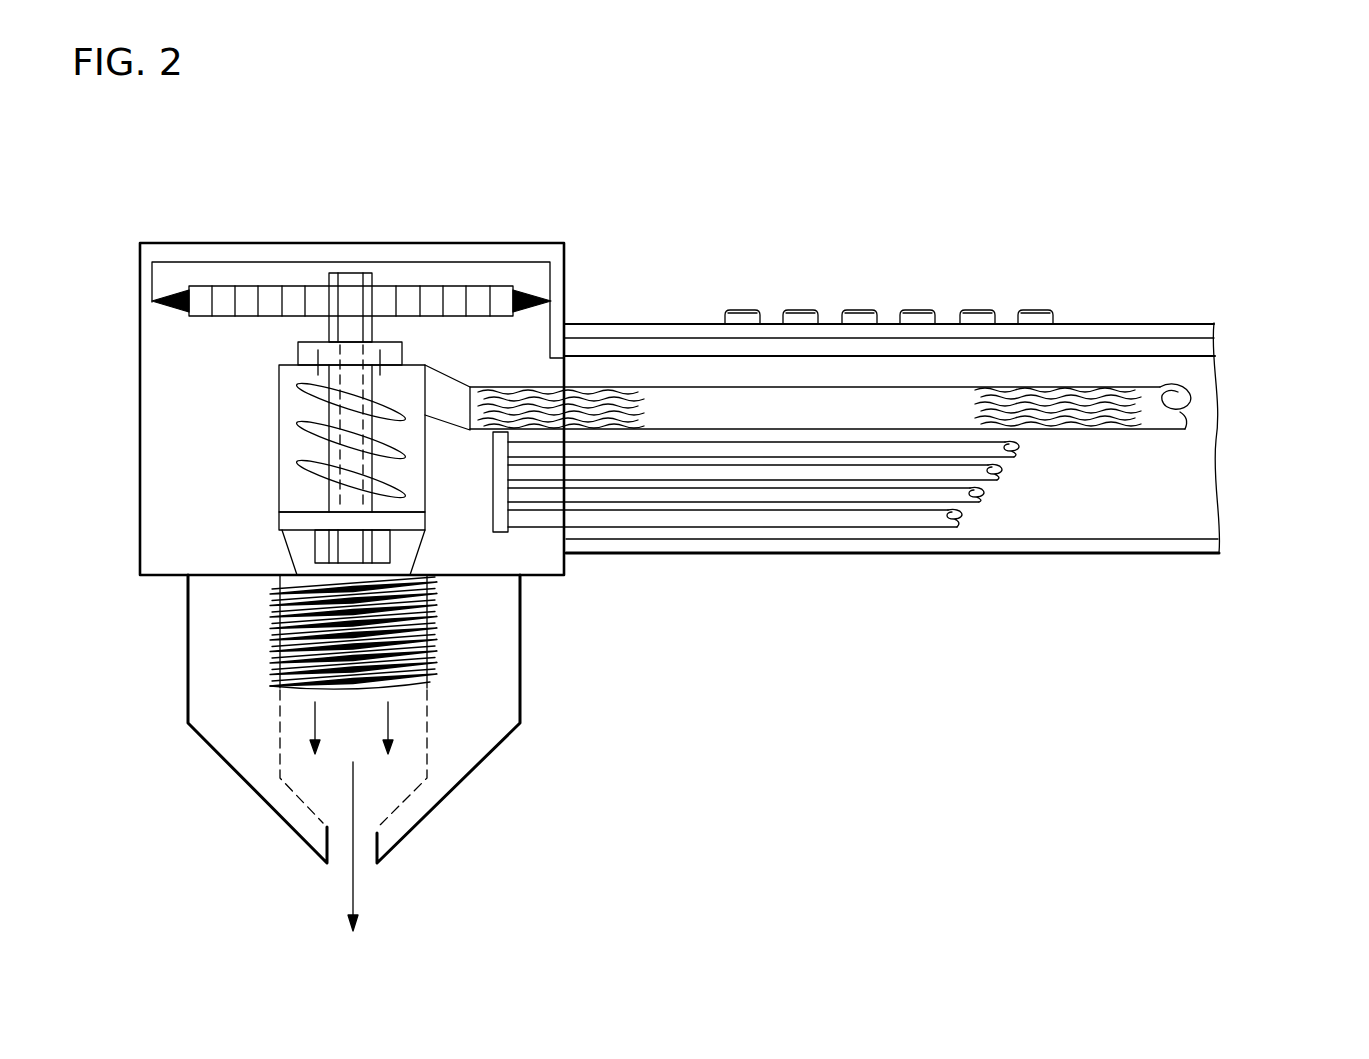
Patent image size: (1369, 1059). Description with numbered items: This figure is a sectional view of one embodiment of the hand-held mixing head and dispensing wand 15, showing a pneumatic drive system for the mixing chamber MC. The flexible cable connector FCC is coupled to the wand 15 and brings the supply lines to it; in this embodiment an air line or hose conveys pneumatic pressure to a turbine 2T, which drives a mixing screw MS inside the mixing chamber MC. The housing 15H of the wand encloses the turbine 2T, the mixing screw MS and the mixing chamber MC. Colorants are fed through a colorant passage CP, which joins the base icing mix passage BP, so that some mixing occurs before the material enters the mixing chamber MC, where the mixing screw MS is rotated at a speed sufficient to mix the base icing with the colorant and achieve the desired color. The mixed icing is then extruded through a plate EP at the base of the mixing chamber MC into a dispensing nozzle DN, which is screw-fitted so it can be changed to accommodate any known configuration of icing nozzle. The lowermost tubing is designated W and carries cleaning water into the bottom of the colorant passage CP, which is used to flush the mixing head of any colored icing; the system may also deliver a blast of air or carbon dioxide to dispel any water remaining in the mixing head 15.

The hand-held mixing head and dispensing wand 15 is at (328, 210).
The housing 15H is at (140, 370).
The turbine 2T is at (425, 277).
The mixing chamber MC is at (403, 387).
The mixing screw MS is at (300, 427).
The plate EP is at (280, 520).
The base icing mix passage BP is at (518, 400).
The colorant passage CP is at (500, 525).
The tubing for cleaning water W is at (755, 522).
The flexible cable connector FCC is at (1255, 472).
The dispensing nozzle DN is at (458, 767).